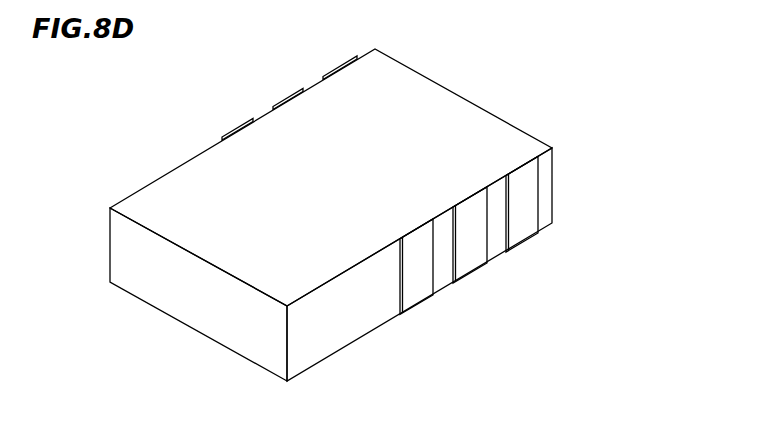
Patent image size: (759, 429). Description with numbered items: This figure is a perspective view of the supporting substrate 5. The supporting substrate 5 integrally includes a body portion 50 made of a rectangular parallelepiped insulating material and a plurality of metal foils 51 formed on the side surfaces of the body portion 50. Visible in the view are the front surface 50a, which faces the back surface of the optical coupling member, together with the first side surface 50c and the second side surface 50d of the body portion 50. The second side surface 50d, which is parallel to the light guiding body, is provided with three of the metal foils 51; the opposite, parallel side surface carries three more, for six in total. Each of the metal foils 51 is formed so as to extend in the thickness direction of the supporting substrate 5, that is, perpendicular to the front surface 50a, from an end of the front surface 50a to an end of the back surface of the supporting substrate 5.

The supporting substrate 5 is at (495, 89).
The body portion 50 is at (425, 69).
The front surface 50a is at (183, 173).
The first side surface 50c is at (257, 350).
The second side surface 50d is at (343, 333).
The metal foils 51 is at (288, 98).